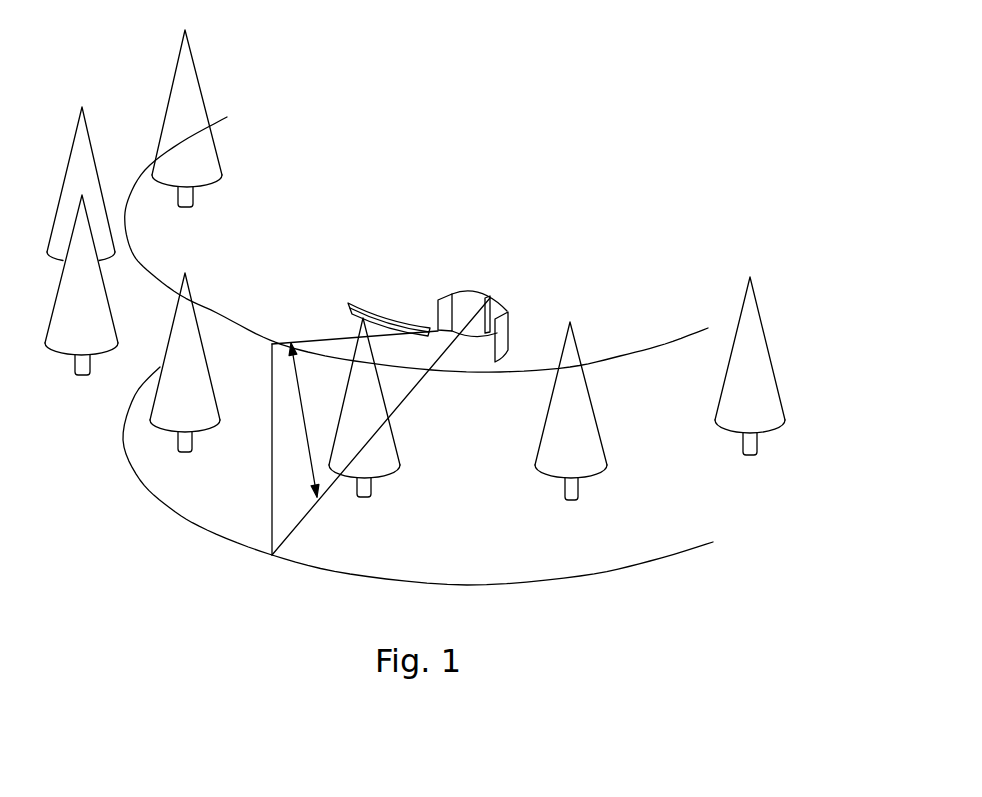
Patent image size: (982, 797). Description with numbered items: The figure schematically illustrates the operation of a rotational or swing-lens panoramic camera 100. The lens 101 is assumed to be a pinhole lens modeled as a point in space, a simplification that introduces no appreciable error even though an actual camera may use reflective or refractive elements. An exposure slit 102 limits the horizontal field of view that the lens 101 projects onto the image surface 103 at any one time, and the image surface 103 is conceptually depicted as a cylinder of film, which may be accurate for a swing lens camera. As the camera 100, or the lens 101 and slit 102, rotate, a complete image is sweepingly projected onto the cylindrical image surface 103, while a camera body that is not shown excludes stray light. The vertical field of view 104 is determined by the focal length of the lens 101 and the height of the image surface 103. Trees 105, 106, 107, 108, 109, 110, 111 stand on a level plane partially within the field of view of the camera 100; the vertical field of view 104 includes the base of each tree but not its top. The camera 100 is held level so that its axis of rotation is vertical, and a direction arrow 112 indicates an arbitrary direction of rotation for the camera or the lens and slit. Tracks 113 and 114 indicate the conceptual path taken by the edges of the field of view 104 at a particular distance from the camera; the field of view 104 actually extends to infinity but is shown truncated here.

The panoramic camera 100 is at (543, 203).
The lens 101 is at (467, 330).
The exposure slit 102 is at (493, 297).
The image surface 103 is at (502, 317).
The vertical field of view 104 is at (297, 392).
The tree 105 is at (727, 420).
The tree 106 is at (555, 470).
The tree 107 is at (383, 465).
The tree 108 is at (188, 293).
The tree 109 is at (93, 332).
The tree 110 is at (83, 127).
The tree 111 is at (188, 73).
The direction arrow 112 is at (355, 305).
The track 113 is at (707, 328).
The track 114 is at (700, 542).